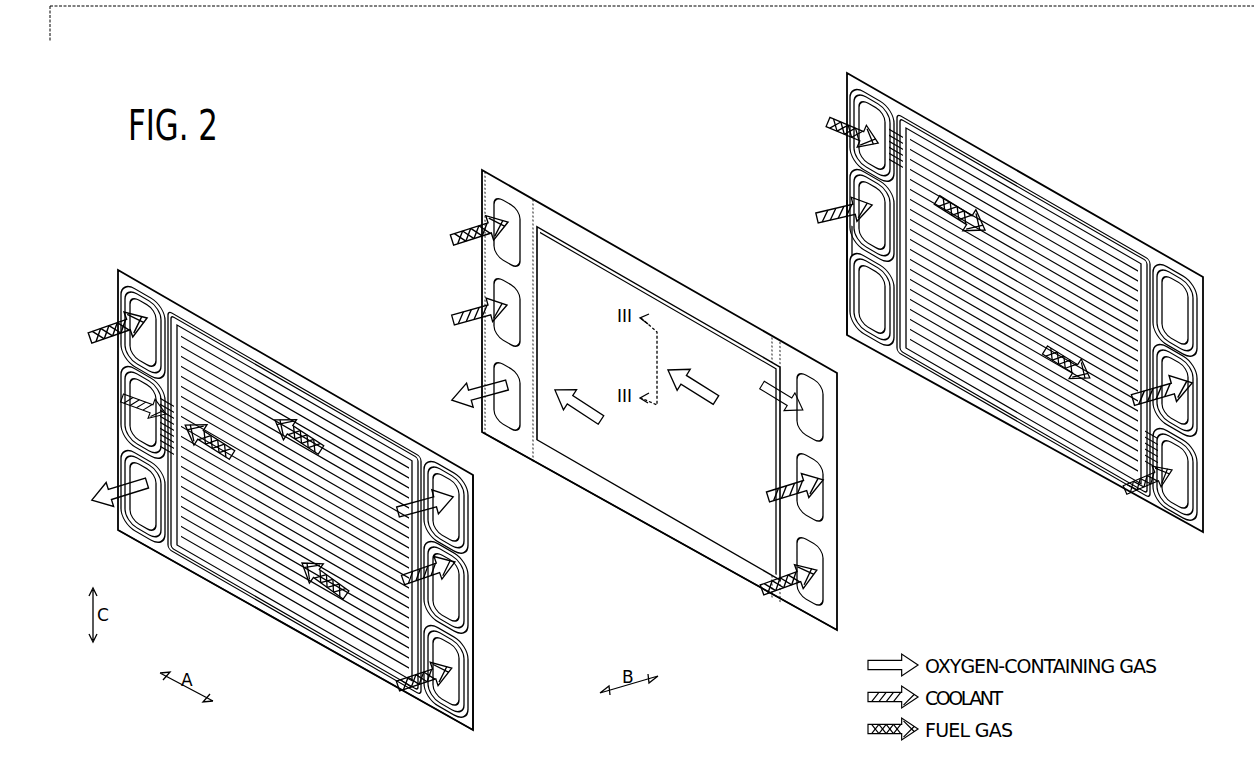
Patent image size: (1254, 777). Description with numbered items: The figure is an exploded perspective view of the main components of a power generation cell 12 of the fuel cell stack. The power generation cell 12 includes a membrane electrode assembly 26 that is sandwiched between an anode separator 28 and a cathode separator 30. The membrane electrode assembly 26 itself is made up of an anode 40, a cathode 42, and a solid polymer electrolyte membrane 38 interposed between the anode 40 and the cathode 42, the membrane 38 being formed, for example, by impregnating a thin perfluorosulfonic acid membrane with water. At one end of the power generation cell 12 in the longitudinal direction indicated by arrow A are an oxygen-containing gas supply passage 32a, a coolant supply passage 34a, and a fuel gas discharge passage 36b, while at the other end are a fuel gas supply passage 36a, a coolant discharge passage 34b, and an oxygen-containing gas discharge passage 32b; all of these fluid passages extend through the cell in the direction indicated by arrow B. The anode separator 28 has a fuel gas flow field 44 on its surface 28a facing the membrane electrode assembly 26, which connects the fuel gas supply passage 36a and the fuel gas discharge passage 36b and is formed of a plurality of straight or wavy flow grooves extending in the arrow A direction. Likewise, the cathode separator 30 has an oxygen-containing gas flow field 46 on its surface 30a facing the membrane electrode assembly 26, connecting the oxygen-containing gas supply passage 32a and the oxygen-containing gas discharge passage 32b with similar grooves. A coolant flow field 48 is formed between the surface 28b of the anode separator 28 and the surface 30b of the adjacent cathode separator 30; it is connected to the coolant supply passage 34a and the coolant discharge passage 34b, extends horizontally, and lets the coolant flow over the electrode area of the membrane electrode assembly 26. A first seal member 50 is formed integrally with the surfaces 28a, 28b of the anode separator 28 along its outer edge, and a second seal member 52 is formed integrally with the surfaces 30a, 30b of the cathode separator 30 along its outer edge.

The power generation cell 12 is at (307, 198).
The membrane electrode assembly 26 is at (482, 170).
The anode separator 28 is at (847, 73).
The surface of the anode separator 28a is at (856, 258).
The surface of the anode separator 28b is at (848, 240).
The cathode separator 30 is at (120, 272).
The surface of the cathode separator 30a is at (468, 633).
The surface of the cathode separator 30b is at (470, 650).
The oxygen-containing gas supply passage 32a is at (455, 520).
The oxygen-containing gas discharge passage 32b is at (135, 476).
The coolant supply passage 34a is at (455, 573).
The coolant discharge passage 34b is at (135, 392).
The fuel gas supply passage 36a is at (138, 306).
The fuel gas discharge passage 36b is at (456, 690).
The solid polymer electrolyte membrane 38 is at (640, 508).
The anode 40 is at (628, 265).
The cathode 42 is at (592, 280).
The fuel gas flow field 44 is at (975, 356).
The oxygen-containing gas flow field 46 is at (282, 583).
The coolant flow field 48 is at (243, 565).
The first seal member 50 is at (953, 135).
The second seal member 52 is at (200, 575).